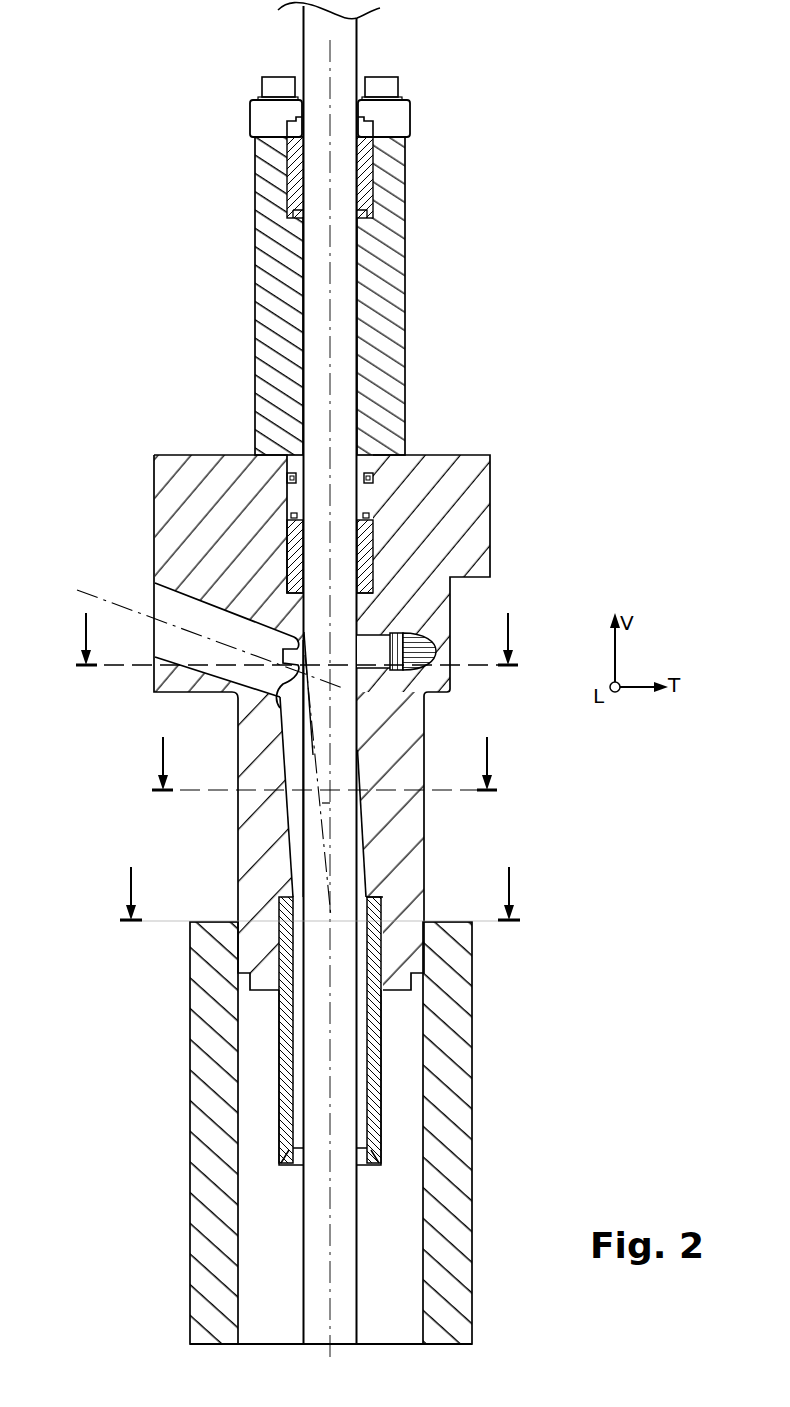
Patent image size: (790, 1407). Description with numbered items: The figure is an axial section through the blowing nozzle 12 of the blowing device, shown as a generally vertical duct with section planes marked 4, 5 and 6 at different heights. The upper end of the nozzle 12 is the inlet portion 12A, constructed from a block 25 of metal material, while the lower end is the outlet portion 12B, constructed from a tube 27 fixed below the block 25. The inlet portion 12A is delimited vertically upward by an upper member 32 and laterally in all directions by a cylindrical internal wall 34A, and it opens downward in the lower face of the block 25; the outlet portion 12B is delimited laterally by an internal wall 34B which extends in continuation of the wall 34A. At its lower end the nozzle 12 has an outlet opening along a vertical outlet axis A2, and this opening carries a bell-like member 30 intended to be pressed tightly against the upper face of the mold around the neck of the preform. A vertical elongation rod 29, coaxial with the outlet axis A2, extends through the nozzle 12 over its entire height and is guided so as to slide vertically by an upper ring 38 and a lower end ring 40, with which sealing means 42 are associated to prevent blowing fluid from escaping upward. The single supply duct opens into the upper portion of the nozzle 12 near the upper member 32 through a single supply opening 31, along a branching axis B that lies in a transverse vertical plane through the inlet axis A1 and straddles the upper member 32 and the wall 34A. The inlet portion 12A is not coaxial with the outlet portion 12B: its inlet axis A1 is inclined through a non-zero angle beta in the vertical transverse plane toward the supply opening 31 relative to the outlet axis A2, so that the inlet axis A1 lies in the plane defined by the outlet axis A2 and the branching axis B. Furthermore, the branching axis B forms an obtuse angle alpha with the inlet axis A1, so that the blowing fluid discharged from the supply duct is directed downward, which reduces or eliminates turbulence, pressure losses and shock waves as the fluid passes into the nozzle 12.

The blowing nozzle 12 is at (541, 778).
The inlet portion 12A is at (283, 738).
The outlet portion 12B is at (300, 1093).
The block 25 is at (460, 540).
The tube 27 is at (373, 1033).
The elongation rod 29 is at (343, 1112).
The bell-like member 30 is at (448, 1172).
The supply opening 31 is at (277, 682).
The upper member 32 is at (283, 633).
The internal wall 34A is at (297, 783).
The internal wall 34B is at (320, 950).
The upper ring 38 is at (368, 182).
The lower end ring 40 is at (373, 545).
The sealing means 42 is at (288, 480).
The inlet axis A1 is at (323, 827).
The outlet axis A2 is at (330, 1240).
The branching axis B is at (97, 590).
The obtuse angle alpha is at (280, 707).
The inclination angle beta is at (325, 803).
The section line 4- 4 is at (302, 639).
The section line 5- 5 is at (329, 763).
The section line 6- 6 is at (324, 894).